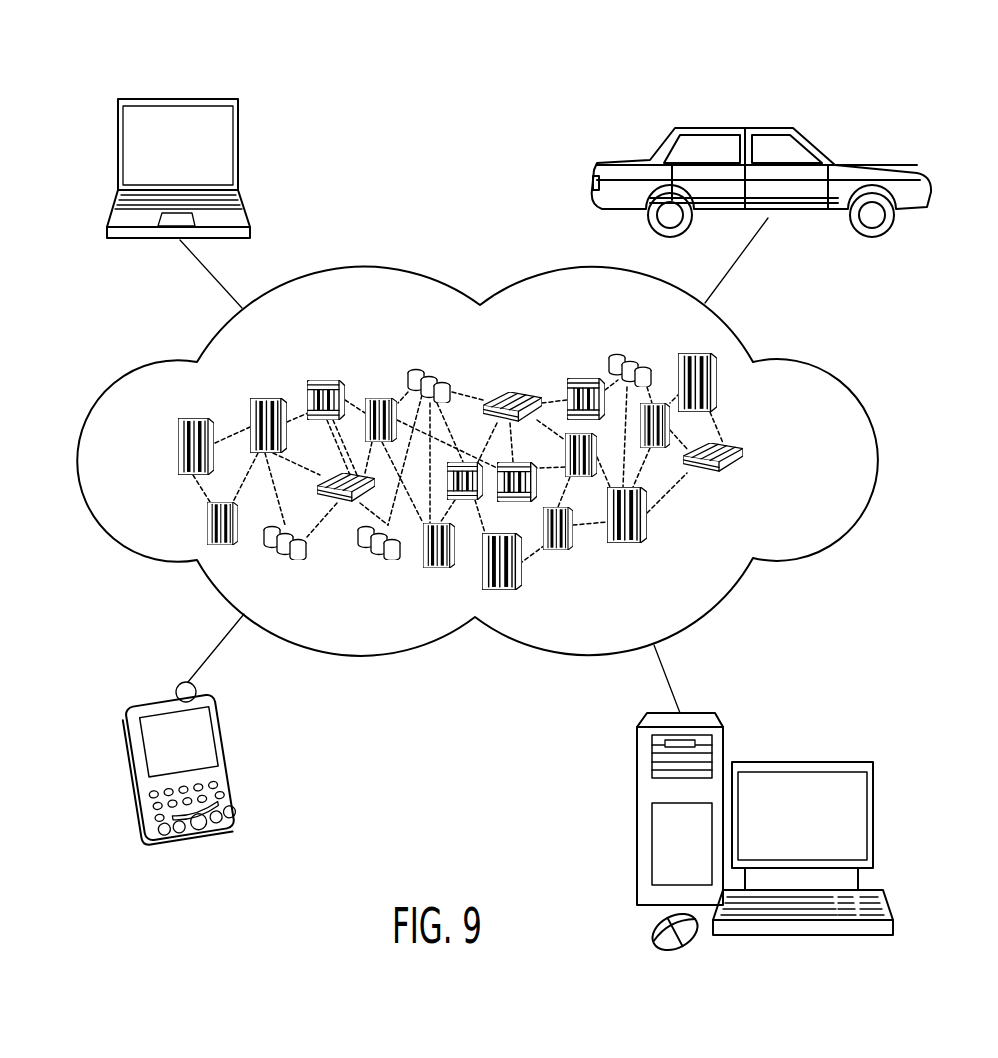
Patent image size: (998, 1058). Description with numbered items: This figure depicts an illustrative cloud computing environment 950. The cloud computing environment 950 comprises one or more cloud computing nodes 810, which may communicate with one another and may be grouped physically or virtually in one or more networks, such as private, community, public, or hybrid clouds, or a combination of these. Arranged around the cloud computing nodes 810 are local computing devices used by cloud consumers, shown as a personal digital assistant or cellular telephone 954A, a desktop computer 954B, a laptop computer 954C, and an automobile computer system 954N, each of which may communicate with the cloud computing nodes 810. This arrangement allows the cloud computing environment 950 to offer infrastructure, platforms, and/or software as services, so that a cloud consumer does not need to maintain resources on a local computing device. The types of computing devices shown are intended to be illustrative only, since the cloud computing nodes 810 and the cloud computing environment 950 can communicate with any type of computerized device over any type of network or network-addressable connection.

The cloud computing environment 950 is at (815, 366).
The cloud computing nodes 810 is at (760, 460).
The personal digital assistant (PDA) or cellular telephone 954A is at (157, 698).
The desktop computer 954B is at (802, 762).
The laptop computer 954C is at (178, 99).
The automobile computer system 954N is at (738, 127).